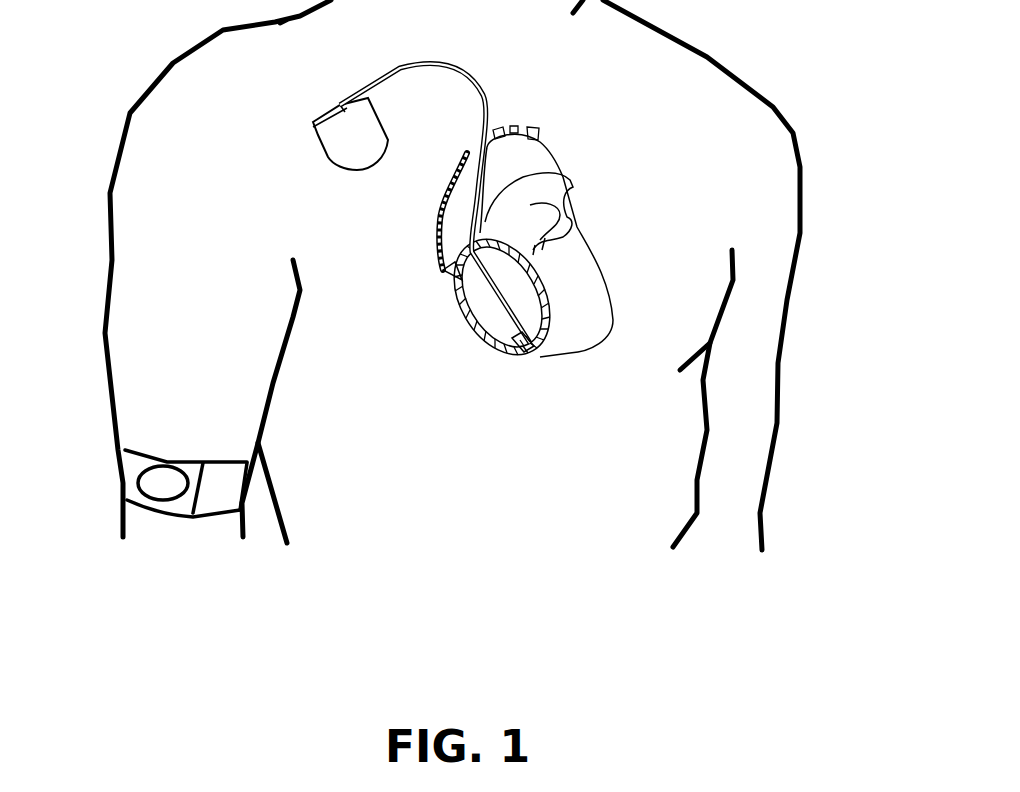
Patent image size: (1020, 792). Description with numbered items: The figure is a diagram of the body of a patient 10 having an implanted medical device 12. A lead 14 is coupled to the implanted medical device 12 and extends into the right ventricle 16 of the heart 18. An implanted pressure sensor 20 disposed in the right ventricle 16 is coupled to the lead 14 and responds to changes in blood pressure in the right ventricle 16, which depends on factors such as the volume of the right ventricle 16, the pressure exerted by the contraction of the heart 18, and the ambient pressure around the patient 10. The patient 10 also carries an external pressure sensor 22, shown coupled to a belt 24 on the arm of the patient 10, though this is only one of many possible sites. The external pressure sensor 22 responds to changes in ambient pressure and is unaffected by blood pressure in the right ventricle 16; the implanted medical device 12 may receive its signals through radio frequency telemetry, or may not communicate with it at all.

The patient 10 is at (800, 160).
The implanted medical device 12 is at (325, 153).
The lead 14 is at (470, 280).
The right ventricle 16 is at (480, 323).
The heart 18 is at (608, 318).
The implanted pressure sensor 20 is at (513, 347).
The external pressure sensor 22 is at (153, 480).
The belt 24 is at (230, 473).